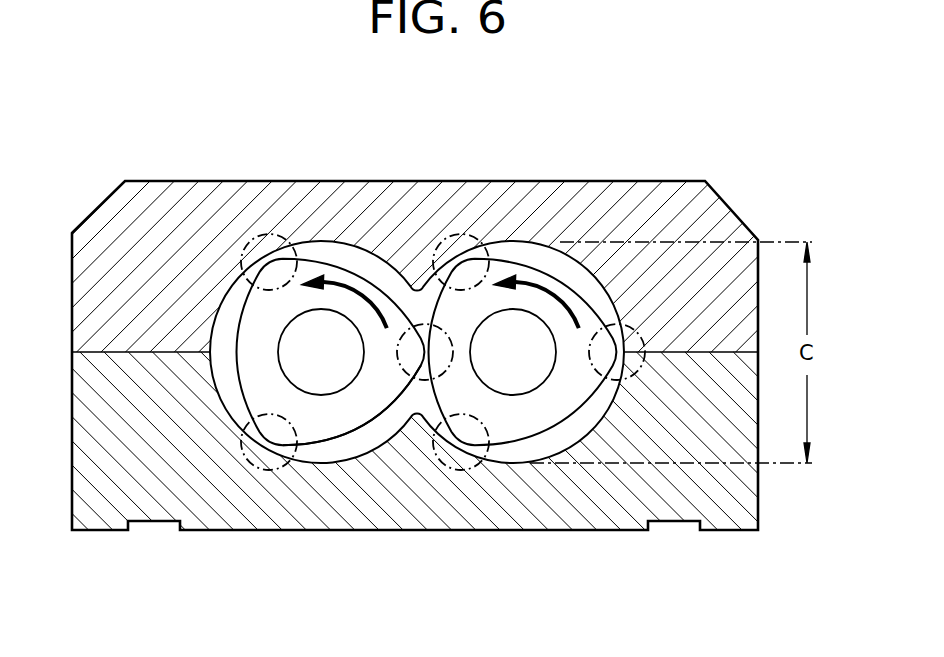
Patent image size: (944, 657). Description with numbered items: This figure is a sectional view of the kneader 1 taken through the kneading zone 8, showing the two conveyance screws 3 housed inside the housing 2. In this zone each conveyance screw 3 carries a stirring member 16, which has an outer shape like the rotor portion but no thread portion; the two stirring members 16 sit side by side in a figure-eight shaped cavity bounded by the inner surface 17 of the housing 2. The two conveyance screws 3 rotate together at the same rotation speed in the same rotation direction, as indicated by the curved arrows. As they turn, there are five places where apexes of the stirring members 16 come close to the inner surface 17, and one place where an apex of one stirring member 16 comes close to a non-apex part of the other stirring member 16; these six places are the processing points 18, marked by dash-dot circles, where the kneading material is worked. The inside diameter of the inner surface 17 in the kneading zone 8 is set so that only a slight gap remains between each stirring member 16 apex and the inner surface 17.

The kneader 1 is at (612, 99).
The kneading zone 8 is at (542, 138).
The housing 2 is at (672, 192).
The conveyance screw 3 is at (312, 360).
The stirring member 16 is at (332, 428).
The inner surface 17 is at (366, 438).
The processing point 18 is at (262, 476).